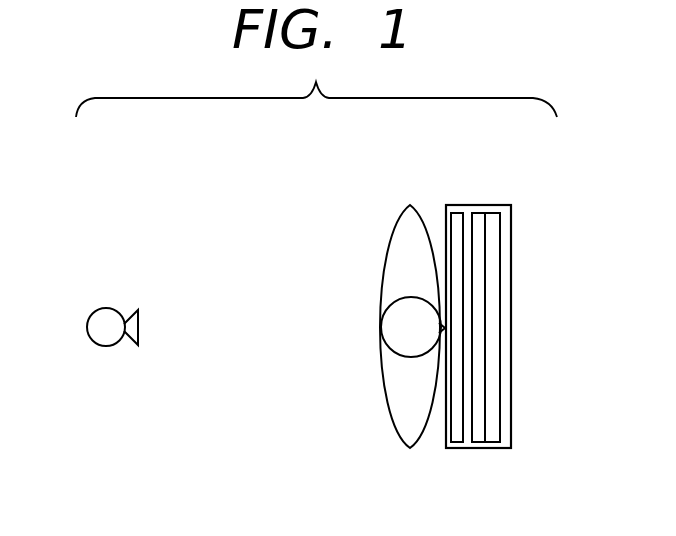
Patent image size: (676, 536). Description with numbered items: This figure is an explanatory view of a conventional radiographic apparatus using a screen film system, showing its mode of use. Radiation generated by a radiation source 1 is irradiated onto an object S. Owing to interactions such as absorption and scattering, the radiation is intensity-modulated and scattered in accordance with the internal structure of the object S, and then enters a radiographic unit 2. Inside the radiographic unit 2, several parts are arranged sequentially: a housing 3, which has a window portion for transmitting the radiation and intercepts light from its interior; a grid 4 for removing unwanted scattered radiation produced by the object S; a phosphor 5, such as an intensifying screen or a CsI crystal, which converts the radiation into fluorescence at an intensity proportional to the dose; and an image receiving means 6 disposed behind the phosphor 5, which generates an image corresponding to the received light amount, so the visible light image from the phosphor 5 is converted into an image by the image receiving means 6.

The radiation source 1 is at (112, 308).
The object S is at (416, 204).
The radiographic unit 2 is at (512, 289).
The housing 3 is at (473, 205).
The grid 4 is at (462, 213).
The phosphor 5 is at (480, 213).
The image receiving means 6 is at (496, 213).